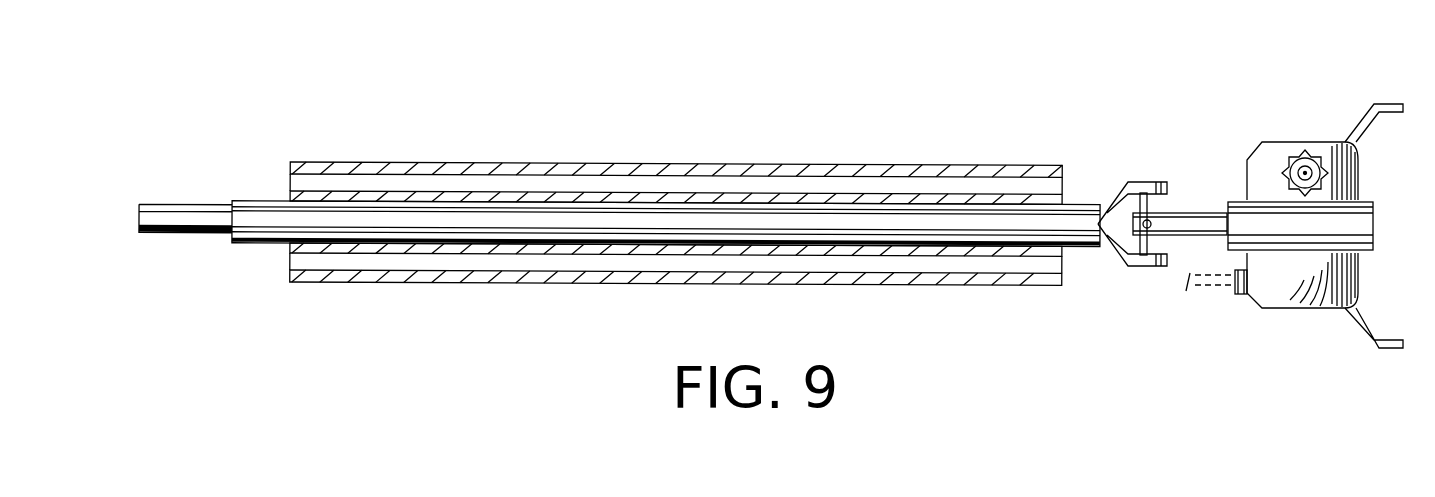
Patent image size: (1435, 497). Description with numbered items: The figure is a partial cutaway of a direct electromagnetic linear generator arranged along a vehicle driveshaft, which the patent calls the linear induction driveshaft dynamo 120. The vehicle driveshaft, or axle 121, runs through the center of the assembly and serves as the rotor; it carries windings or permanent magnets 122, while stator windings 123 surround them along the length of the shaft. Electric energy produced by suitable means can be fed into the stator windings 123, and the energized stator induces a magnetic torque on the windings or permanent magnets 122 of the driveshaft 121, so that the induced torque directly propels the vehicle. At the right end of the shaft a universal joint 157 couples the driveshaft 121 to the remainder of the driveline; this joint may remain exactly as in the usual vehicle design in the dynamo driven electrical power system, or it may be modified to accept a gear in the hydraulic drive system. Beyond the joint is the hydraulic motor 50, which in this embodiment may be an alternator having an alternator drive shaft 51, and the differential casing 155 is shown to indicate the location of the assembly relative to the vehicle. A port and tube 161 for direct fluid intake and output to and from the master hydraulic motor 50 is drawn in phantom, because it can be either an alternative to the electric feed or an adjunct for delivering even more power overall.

The linear induction driveshaft dynamo 120 is at (637, 162).
The axle 121 is at (253, 200).
The windings or permanent magnets 122 is at (290, 247).
The stator windings 123 is at (492, 165).
The universal joint 157 is at (1134, 180).
The hydraulic motor 50 is at (1275, 287).
The alternator drive shaft 51 is at (1292, 158).
The differential casing 155 is at (1357, 132).
The tube 161 is at (1187, 283).